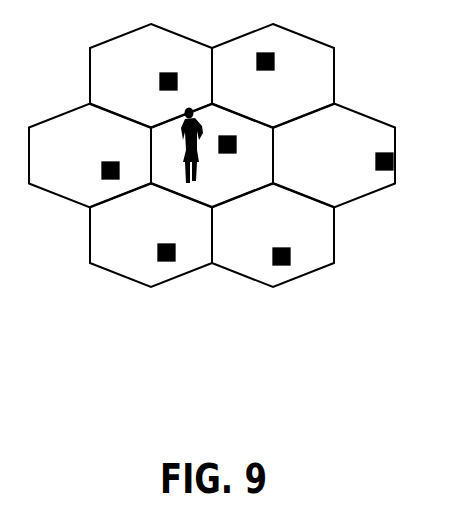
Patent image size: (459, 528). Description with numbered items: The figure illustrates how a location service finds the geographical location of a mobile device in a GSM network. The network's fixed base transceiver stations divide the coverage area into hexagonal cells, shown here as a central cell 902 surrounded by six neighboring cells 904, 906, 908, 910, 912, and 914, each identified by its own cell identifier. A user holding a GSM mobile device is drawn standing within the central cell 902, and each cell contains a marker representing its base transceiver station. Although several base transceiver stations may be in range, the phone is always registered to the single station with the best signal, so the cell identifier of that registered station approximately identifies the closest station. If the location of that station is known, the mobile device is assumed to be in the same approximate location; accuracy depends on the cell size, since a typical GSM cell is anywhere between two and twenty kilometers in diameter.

The cell 902 is at (242, 185).
The cell 904 is at (304, 100).
The cell 906 is at (347, 186).
The cell 908 is at (262, 268).
The cell 910 is at (137, 268).
The cell 912 is at (74, 183).
The cell 914 is at (137, 99).